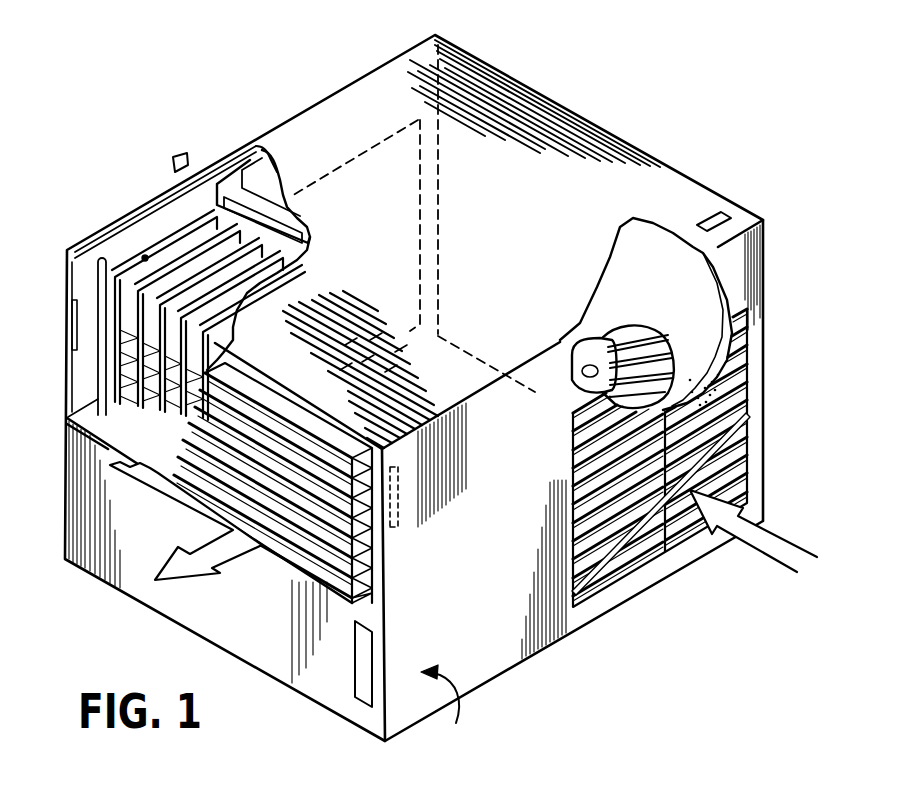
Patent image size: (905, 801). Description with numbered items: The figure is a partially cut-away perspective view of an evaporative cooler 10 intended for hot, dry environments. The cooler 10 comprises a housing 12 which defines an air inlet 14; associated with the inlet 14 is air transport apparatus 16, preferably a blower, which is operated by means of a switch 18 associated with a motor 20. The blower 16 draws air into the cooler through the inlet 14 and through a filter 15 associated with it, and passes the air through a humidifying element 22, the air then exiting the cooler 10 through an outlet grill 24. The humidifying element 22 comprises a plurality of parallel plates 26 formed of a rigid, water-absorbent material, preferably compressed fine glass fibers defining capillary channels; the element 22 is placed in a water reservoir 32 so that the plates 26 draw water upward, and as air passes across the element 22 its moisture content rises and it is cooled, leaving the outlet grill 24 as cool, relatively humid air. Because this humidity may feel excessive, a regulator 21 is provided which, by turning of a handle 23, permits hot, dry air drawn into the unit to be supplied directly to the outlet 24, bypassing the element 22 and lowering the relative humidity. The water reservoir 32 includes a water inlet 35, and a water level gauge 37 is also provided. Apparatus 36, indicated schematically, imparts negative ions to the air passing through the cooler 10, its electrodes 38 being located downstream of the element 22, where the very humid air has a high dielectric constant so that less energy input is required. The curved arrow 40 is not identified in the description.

The evaporative cooler 10 is at (628, 82).
The housing 12 is at (475, 78).
The air inlet 14 is at (732, 431).
The filter 15 is at (742, 405).
The air transport apparatus 16 is at (663, 375).
The switch 18 is at (714, 222).
The motor 20 is at (598, 367).
The regulator 21 is at (228, 170).
The humidifying element 22 is at (145, 258).
The handle 23 is at (173, 157).
The outlet grill 24 is at (293, 503).
The parallel plates 26 is at (193, 254).
The water reservoir 32 is at (70, 452).
The water inlet 35 is at (72, 254).
The apparatus for imparting negative ions 36 is at (268, 165).
The water level gauge 37 is at (363, 678).
The electrodes 38 is at (72, 316).
The front panel 40 is at (459, 697).